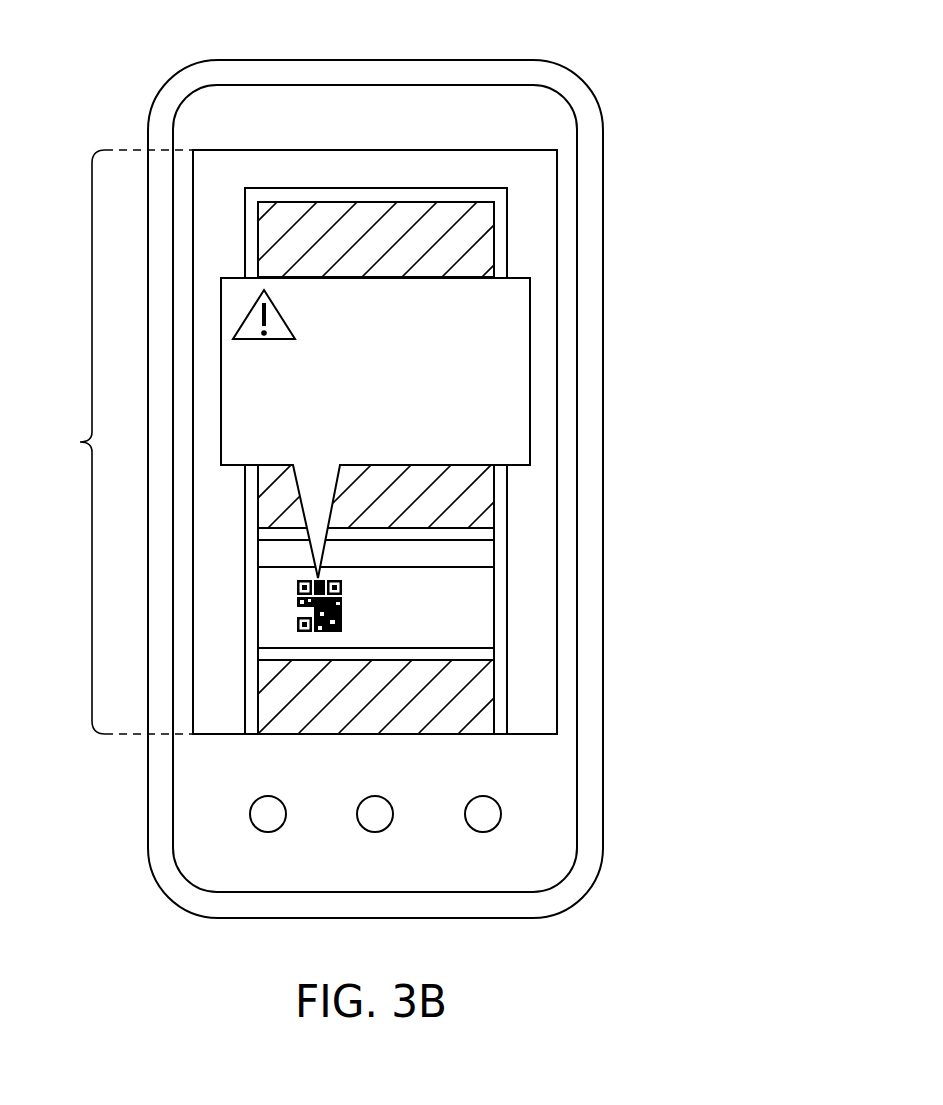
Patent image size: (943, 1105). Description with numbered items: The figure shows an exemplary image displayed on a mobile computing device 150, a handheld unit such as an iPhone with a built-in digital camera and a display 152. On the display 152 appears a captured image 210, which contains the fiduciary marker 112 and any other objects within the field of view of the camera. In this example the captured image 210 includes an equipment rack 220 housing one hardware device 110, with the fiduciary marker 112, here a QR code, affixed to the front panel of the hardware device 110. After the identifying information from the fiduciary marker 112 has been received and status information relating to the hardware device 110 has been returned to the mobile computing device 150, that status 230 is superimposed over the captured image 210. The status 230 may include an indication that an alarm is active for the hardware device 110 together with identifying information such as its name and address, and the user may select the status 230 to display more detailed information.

The mobile computing device 150 is at (518, 60).
The display 152 is at (557, 373).
The captured image 210 is at (112, 442).
The equipment rack 220 is at (508, 505).
The status 230 is at (515, 278).
The hardware device 110 is at (458, 592).
The fiduciary marker 112 is at (342, 613).